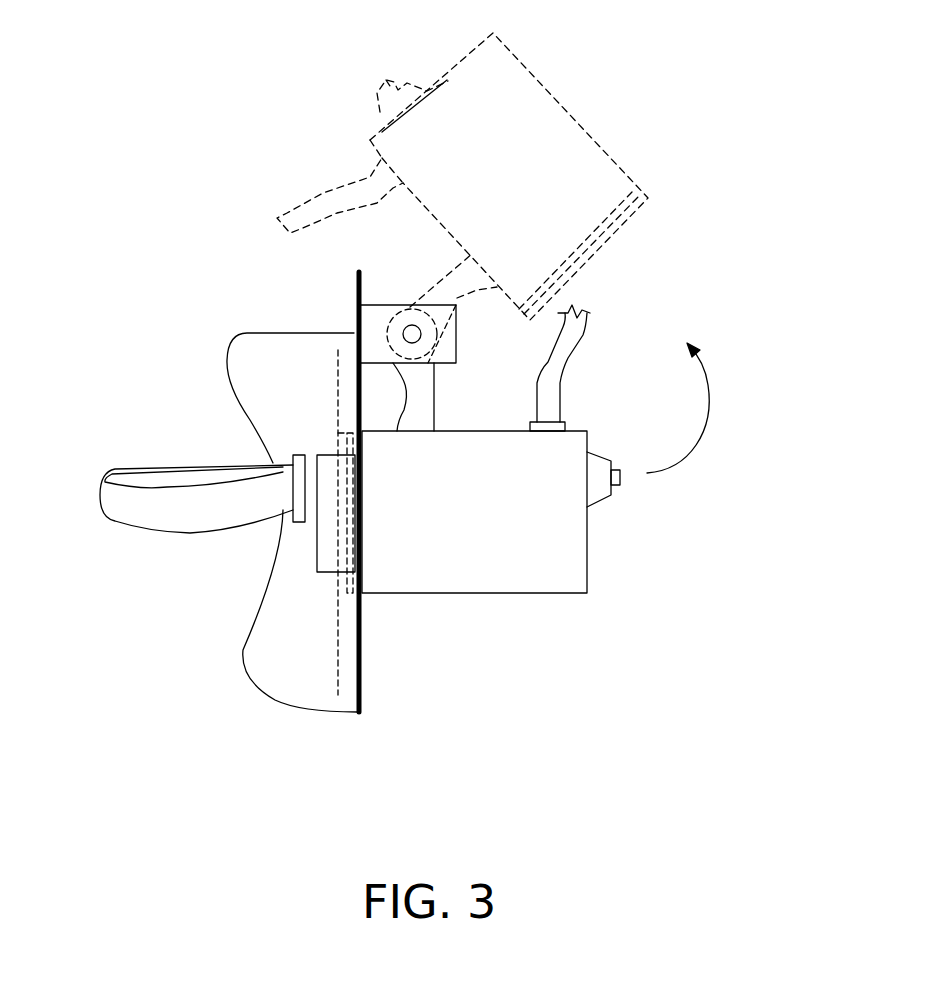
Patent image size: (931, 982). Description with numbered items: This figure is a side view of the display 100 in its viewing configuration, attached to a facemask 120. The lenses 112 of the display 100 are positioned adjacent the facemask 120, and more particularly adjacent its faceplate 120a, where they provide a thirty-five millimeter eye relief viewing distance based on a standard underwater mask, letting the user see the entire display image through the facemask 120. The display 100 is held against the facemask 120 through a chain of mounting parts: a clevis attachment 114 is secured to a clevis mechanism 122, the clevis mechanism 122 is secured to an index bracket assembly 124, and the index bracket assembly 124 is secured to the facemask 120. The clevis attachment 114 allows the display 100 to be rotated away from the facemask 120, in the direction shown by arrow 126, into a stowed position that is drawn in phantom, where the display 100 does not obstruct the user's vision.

The display 100 is at (597, 683).
The lenses 112 is at (337, 556).
The clevis attachment 114 is at (434, 408).
The facemask 120 is at (240, 655).
The faceplate 120a is at (340, 392).
The clevis mechanism 122 is at (386, 305).
The index bracket assembly 124 is at (355, 317).
The arrow 126 is at (705, 433).